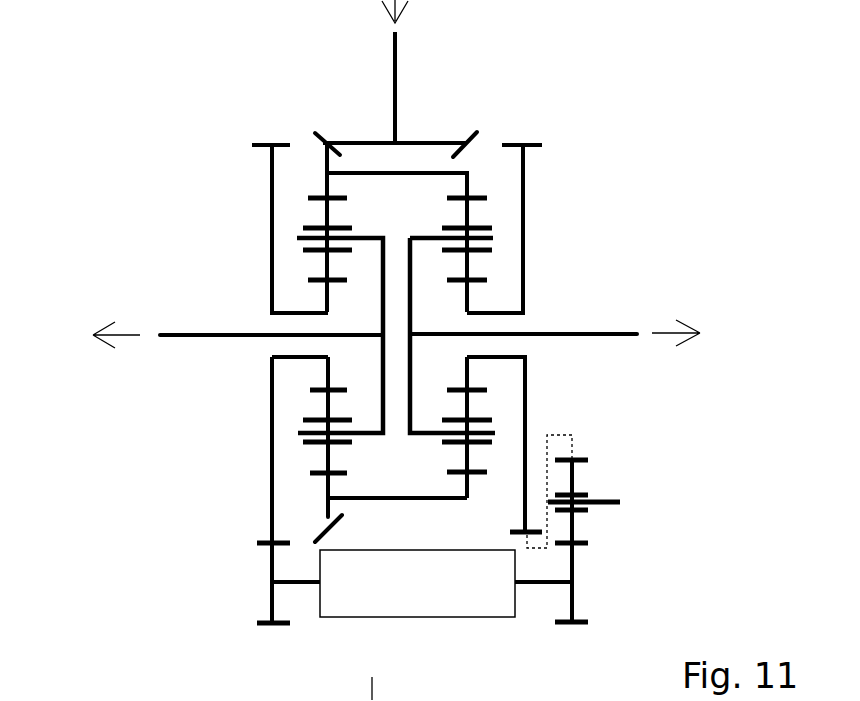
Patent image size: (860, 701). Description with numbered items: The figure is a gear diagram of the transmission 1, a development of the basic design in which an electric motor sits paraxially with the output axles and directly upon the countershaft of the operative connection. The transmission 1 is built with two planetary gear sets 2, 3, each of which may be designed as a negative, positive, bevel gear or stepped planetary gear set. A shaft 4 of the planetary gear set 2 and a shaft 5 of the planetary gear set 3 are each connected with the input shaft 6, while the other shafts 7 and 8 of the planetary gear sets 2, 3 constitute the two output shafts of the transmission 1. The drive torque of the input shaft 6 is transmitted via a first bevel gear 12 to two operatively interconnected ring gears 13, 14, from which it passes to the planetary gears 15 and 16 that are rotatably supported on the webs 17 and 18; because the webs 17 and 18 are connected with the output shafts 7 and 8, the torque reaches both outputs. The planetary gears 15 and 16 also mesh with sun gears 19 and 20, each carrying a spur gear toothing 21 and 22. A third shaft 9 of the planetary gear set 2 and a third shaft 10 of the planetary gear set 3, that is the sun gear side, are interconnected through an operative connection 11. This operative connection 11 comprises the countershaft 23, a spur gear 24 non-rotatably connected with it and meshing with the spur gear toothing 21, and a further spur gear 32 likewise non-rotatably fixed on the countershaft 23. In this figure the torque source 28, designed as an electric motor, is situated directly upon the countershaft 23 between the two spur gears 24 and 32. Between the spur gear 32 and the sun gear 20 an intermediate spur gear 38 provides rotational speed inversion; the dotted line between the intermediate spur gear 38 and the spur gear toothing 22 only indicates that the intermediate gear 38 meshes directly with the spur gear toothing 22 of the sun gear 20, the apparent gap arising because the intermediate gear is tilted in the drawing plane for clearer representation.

The transmission 1 is at (87, 155).
The planetary gear set 2 is at (237, 240).
The planetary gear set 3 is at (573, 215).
The shaft 4 is at (318, 153).
The shaft 5 is at (473, 175).
The input shaft 6 is at (395, 50).
The output shaft 7 is at (167, 335).
The output shaft 8 is at (627, 332).
The third shaft 9 is at (258, 445).
The third shaft 10 is at (545, 418).
The operative connection 11 is at (248, 590).
The first bevel gear 12 is at (440, 140).
The ring gear 13 is at (330, 478).
The ring gear 14 is at (468, 487).
The planetary gear 15 is at (328, 408).
The planetary gear 16 is at (470, 407).
The web 17 is at (383, 341).
The web 18 is at (413, 268).
The sun gear 19 is at (325, 300).
The sun gear 20 is at (470, 290).
The spur gear toothing 21 is at (262, 545).
The spur gear toothing 22 is at (522, 535).
The countershaft 23 is at (300, 587).
The spur gear 24 is at (270, 562).
The torque source 28 is at (378, 620).
The spur gear 32 is at (575, 600).
The intermediate spur gear 38 is at (575, 532).